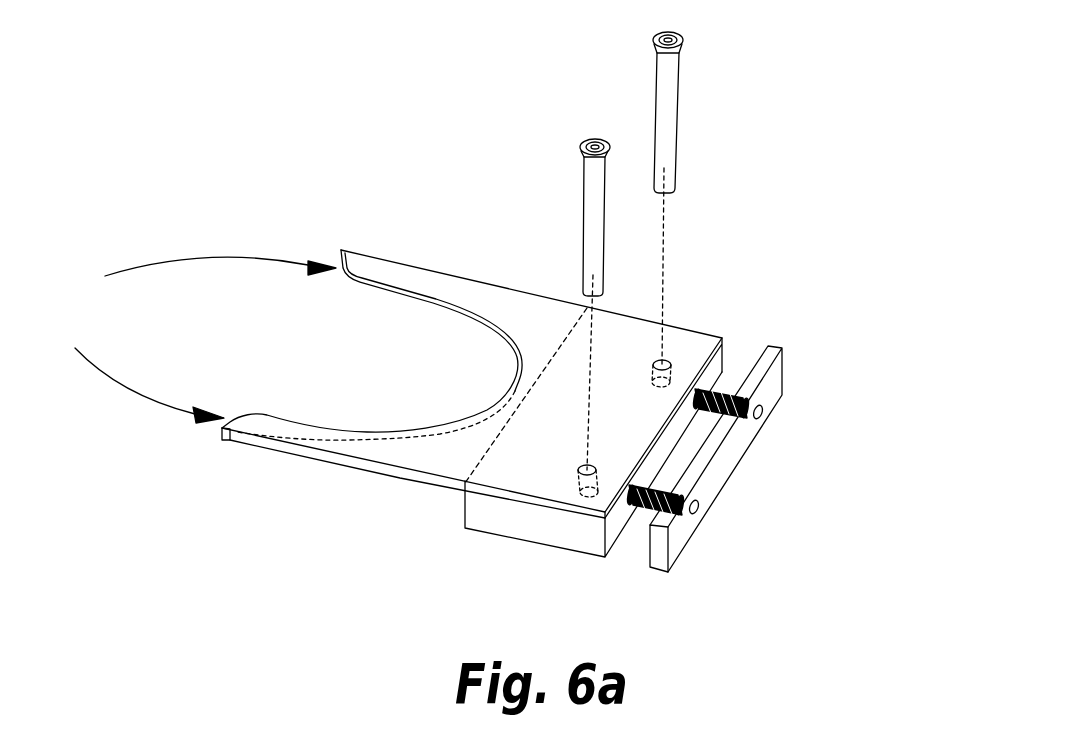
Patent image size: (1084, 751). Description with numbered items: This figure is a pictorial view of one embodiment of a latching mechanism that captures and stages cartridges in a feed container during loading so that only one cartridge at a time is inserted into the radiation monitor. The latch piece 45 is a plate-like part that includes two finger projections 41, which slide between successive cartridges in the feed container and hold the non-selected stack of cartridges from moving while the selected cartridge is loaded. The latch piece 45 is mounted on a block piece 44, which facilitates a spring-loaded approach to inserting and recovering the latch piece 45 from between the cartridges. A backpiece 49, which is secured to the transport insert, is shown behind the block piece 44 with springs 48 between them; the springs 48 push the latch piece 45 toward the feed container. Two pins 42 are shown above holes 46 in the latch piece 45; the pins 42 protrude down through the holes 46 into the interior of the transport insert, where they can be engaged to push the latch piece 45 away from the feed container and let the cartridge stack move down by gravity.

The finger projections 41 is at (202, 340).
The pins 42 is at (677, 69).
The block piece 44 is at (593, 464).
The latch piece 45 is at (547, 445).
The holes 46 is at (672, 362).
The springs 48 is at (700, 412).
The backpiece 49 is at (737, 450).